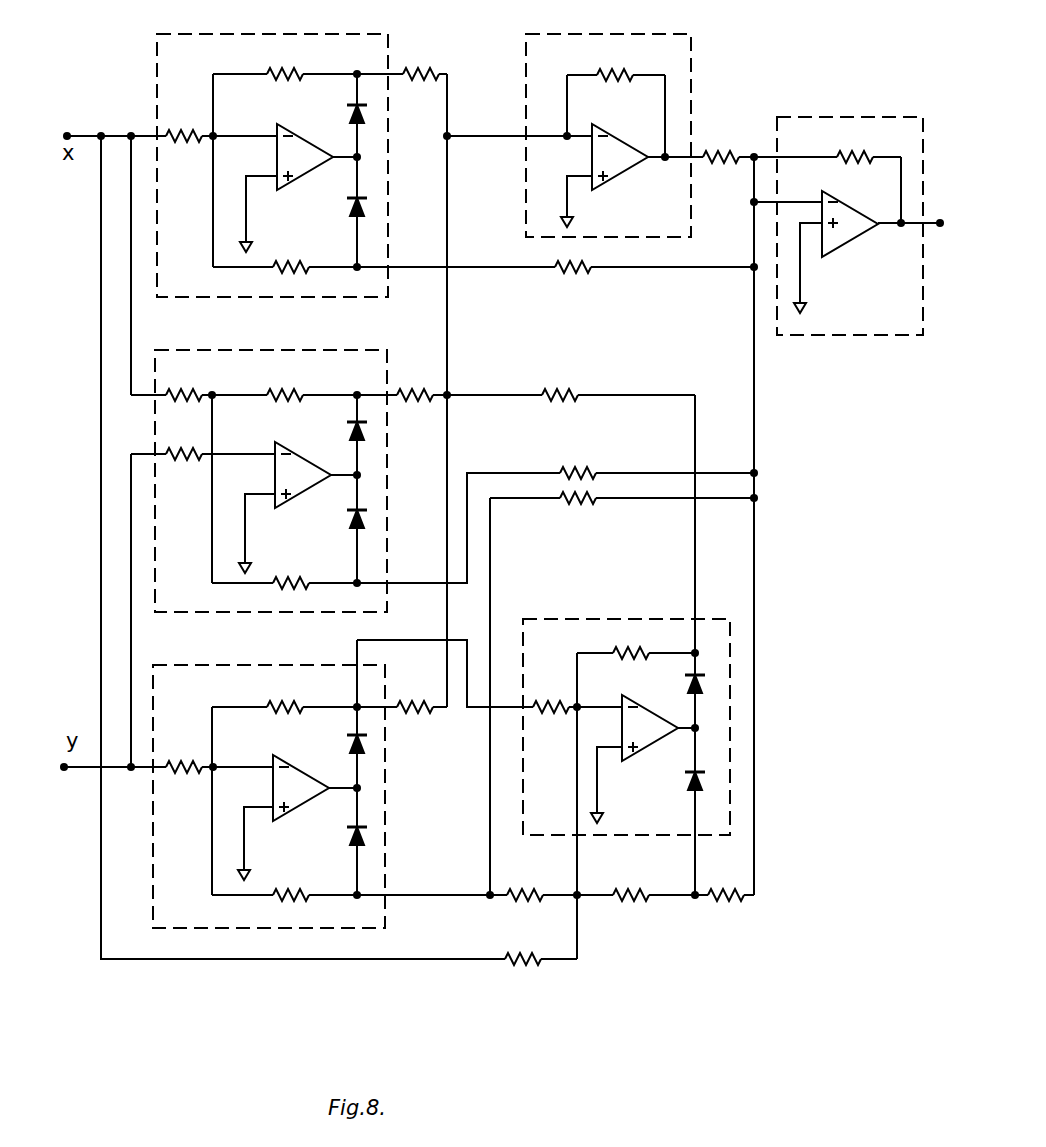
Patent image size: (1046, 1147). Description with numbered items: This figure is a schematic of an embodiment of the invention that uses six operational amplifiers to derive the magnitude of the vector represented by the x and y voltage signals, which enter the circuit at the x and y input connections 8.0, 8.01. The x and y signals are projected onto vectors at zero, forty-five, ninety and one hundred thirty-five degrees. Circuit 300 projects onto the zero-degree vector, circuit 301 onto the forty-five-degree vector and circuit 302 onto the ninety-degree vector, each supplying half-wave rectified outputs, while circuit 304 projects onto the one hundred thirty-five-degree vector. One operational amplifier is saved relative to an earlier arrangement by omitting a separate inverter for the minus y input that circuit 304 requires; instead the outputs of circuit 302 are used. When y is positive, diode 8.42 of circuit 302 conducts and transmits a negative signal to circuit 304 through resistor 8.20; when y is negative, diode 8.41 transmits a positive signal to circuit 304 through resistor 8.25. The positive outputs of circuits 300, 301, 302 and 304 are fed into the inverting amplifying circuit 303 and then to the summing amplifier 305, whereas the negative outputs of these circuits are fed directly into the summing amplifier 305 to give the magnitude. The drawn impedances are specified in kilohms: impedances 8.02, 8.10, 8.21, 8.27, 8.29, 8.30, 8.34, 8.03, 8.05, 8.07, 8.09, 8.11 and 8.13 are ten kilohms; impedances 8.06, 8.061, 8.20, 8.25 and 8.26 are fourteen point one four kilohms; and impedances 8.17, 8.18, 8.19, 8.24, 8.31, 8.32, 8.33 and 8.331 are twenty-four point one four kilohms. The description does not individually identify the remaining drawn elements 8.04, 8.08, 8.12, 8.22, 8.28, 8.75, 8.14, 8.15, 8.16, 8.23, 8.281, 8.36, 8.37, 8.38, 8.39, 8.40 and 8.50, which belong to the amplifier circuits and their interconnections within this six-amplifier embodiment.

The 0° circuit 300 is at (157, 45).
The 45° circuit 301 is at (258, 350).
The 90° amplifier circuit 302 is at (240, 665).
The inverting amplifying circuit 303 is at (691, 45).
The 135° circuit 304 is at (610, 619).
The summing amplifier 305 is at (830, 336).
The x input terminal 8.0 is at (70, 133).
The y input terminal 8.01 is at (66, 772).
The impedance 8.02 is at (184, 131).
The impedance 8.03 is at (298, 70).
The operational amplifier 8.04 is at (302, 140).
The impedance 8.05 is at (285, 262).
The impedance 8.06 is at (196, 390).
The impedance 8.061 is at (196, 450).
The impedance 8.07 is at (295, 390).
The operational amplifier 8.08 is at (309, 462).
The impedance 8.09 is at (298, 580).
The impedance 8.10 is at (182, 762).
The impedance 8.11 is at (280, 702).
The operational amplifier 8.12 is at (300, 770).
The impedance 8.13 is at (282, 892).
The ground connection 8.14 is at (246, 205).
The ground connection 8.15 is at (247, 520).
The ground connection 8.16 is at (244, 845).
The impedance 8.17 is at (428, 70).
The impedance 8.18 is at (413, 390).
The impedance 8.19 is at (414, 703).
The resistor 8.20 is at (515, 892).
The impedance 8.21 is at (612, 70).
The operational amplifier 8.22 is at (618, 140).
The ground connection 8.23 is at (572, 210).
The impedance 8.24 is at (570, 390).
The resistor 8.25 is at (543, 703).
The impedance 8.26 is at (532, 963).
The impedance 8.27 is at (620, 650).
The operational amplifier 8.28 is at (648, 712).
The ground connection 8.281 is at (600, 778).
The impedance 8.29 is at (635, 900).
The impedance 8.30 is at (718, 152).
The impedance 8.31 is at (578, 271).
The impedance 8.32 is at (588, 468).
The impedance 8.33 is at (596, 502).
The impedance 8.331 is at (725, 900).
The impedance 8.34 is at (850, 153).
The ground connection 8.36 is at (805, 288).
The diode 8.37 is at (368, 114).
The diode 8.38 is at (368, 206).
The diode 8.39 is at (368, 432).
The diode 8.40 is at (368, 524).
The diode 8.41 is at (368, 745).
The diode 8.42 is at (367, 833).
The connecting line 8.50 is at (395, 962).
The operational amplifier 8.75 is at (850, 247).